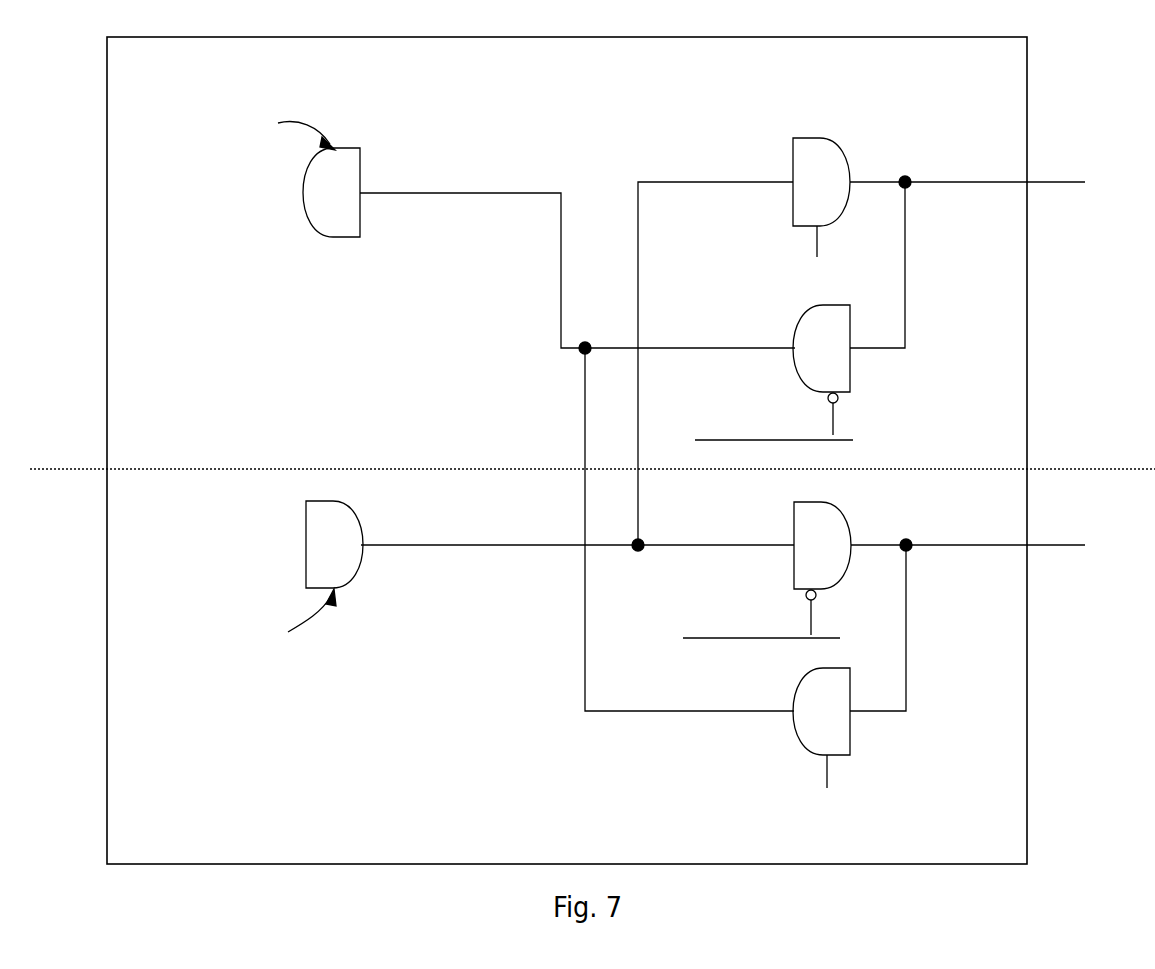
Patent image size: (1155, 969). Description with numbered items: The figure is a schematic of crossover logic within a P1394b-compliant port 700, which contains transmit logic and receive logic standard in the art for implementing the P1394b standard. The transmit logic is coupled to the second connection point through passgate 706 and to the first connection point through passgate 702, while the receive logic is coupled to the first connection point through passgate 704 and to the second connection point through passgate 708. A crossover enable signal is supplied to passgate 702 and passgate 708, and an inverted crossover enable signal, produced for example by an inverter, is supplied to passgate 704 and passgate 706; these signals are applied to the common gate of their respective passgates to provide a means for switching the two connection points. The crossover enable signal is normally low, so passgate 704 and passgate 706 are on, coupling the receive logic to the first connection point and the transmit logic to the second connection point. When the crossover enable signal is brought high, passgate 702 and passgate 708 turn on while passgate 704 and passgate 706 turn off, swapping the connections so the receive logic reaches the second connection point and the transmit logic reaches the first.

The P1394b-compliant port 700 is at (50, 133).
The passgate 702 is at (783, 138).
The passgate 704 is at (872, 370).
The passgate 706 is at (851, 522).
The passgate 708 is at (863, 744).